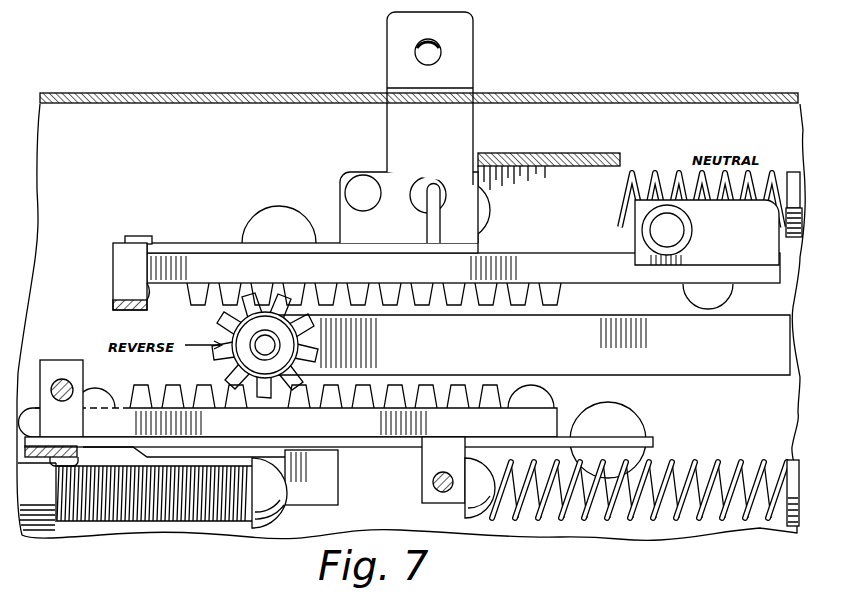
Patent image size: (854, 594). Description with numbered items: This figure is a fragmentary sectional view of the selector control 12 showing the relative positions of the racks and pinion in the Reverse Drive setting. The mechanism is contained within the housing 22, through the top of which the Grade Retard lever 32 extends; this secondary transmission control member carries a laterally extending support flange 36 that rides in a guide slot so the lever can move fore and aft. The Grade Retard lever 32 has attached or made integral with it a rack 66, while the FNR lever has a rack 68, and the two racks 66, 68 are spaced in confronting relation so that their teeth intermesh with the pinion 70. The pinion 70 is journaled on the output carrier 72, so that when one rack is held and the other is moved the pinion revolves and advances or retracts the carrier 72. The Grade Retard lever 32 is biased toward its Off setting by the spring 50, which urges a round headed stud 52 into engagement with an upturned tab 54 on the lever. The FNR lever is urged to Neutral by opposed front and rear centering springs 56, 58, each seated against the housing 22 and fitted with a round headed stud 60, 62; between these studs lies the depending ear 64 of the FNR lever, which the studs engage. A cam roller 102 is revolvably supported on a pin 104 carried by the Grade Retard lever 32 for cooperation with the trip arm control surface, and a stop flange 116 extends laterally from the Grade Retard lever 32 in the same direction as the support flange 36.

The selector control 12 is at (748, 94).
The housing 22 is at (187, 93).
The secondary transmission control member 32 is at (473, 52).
The support flange 36 is at (525, 153).
The spring 50 is at (638, 178).
The round headed stud 52 is at (455, 180).
The upturned tab 54 is at (427, 195).
The front centering spring 56 is at (585, 525).
The rear centering spring 58 is at (170, 520).
The round headed stud 60 is at (475, 520).
The round headed stud 62 is at (268, 526).
The depending ear 64 is at (335, 478).
The rack 66 is at (163, 254).
The rack 68 is at (123, 406).
The pinion 70 is at (225, 358).
The output carrier 72 is at (598, 320).
The cam roller 102 is at (688, 226).
The pin 104 is at (676, 232).
The stop flange 116 is at (113, 306).